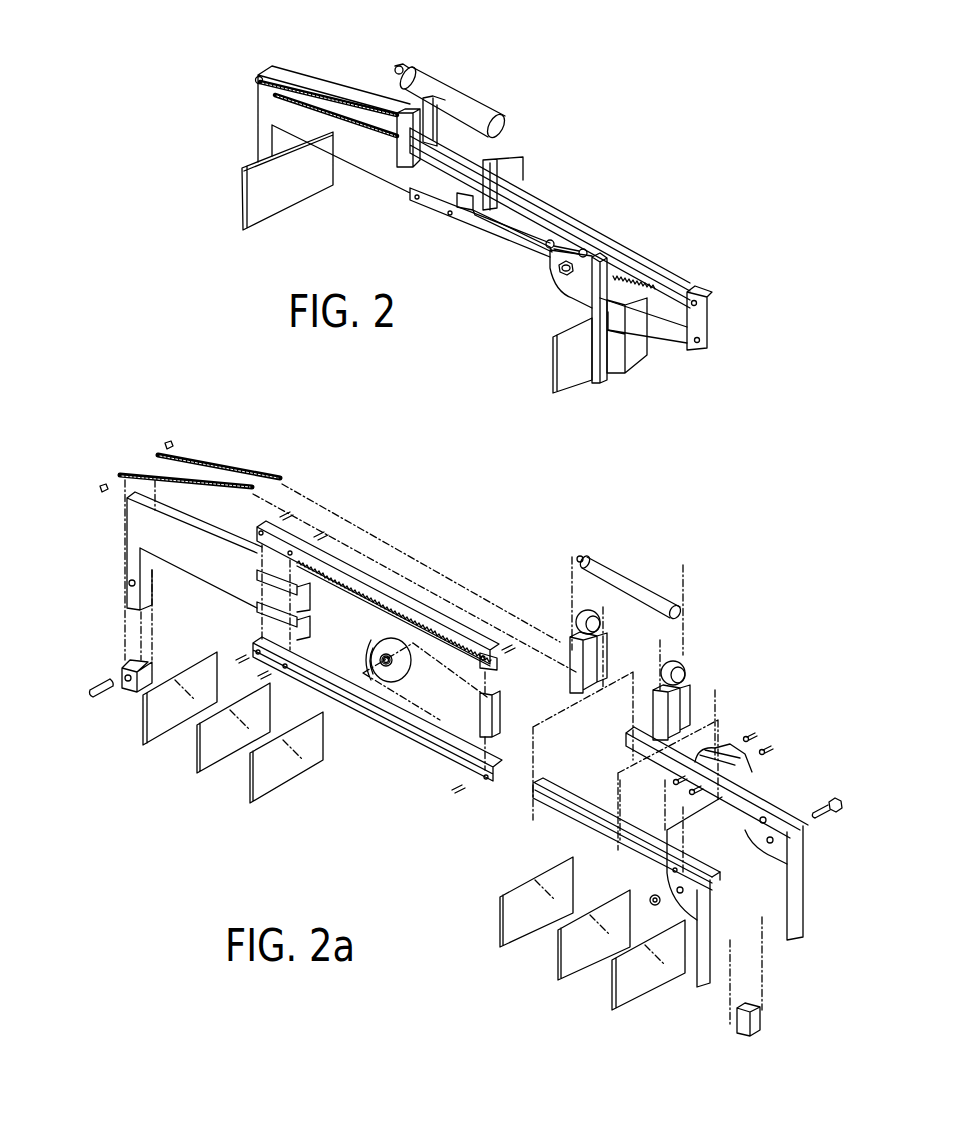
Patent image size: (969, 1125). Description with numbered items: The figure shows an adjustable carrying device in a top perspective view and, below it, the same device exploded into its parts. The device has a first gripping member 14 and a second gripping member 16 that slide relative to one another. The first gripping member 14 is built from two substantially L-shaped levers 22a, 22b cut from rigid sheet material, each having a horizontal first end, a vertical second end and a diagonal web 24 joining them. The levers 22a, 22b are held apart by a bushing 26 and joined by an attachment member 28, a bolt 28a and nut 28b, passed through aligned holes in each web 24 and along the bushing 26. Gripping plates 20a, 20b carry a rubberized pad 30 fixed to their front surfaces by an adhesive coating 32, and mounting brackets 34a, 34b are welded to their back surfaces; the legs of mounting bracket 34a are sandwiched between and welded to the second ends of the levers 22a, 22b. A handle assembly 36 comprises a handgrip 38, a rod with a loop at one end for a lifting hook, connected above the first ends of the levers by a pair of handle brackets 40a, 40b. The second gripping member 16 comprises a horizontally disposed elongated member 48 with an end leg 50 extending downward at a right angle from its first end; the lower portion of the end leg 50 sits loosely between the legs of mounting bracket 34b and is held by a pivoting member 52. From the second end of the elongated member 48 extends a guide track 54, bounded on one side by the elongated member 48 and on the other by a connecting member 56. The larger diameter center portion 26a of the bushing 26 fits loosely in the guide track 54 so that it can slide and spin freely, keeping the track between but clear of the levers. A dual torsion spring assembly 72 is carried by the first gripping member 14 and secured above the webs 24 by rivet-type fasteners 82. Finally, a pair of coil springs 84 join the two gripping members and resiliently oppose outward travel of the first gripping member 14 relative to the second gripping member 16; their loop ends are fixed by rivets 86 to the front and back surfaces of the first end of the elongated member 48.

In FIG. 2, the first gripping member 14 is at (543, 185).
In FIG. 2, the second gripping member 16 is at (303, 62).
In FIG. 2, the gripping plate 20a is at (558, 395).
In FIG. 2a, the gripping plate 20a is at (615, 1006).
In FIG. 2, the gripping plate 20b is at (240, 200).
In FIG. 2a, the gripping plate 20b is at (153, 742).
In FIG. 2, the L-shaped lever 22a is at (605, 383).
In FIG. 2a, the L-shaped lever 22a is at (552, 807).
In FIG. 2, the L-shaped lever 22b is at (586, 218).
In FIG. 2a, the L-shaped lever 22b is at (803, 905).
In FIG. 2, the web 24 is at (572, 287).
In FIG. 2a, the web 24 is at (775, 843).
In FIG. 2a, the bushing 26 is at (377, 658).
In FIG. 2a, the larger diameter center portion 26a is at (411, 665).
In FIG. 2, the attachment member 28 is at (560, 268).
In FIG. 2a, the bolt 28a is at (828, 815).
In FIG. 2a, the nut 28b is at (653, 895).
In FIG. 2a, the rubberized pad 30 is at (258, 797).
In FIG. 2a, the adhesive coating 32 is at (198, 772).
In FIG. 2a, the mounting bracket 34a is at (760, 1020).
In FIG. 2a, the mounting bracket 34b is at (122, 672).
In FIG. 2, the handle assembly 36 is at (468, 88).
In FIG. 2a, the handgrip 38 is at (633, 585).
In FIG. 2a, the handle bracket 40a is at (579, 612).
In FIG. 2a, the handle bracket 40b is at (687, 665).
In FIG. 2, the elongated member 48 is at (383, 188).
In FIG. 2a, the elongated member 48 is at (128, 512).
In FIG. 2a, the end leg 50 is at (128, 583).
In FIG. 2a, the pivoting member 52 is at (97, 703).
In FIG. 2, the guide track 54 is at (662, 297).
In FIG. 2, the connecting member 56 is at (704, 318).
In FIG. 2a, the dual torsion spring assembly 72 is at (733, 747).
In FIG. 2a, the rivet-type fastener 82 is at (773, 752).
In FIG. 2, the coil spring 84 is at (283, 92).
In FIG. 2a, the coil spring 84 is at (238, 468).
In FIG. 2, the rivet-type fastener 86 is at (258, 76).
In FIG. 2a, the rivet-type fastener 86 is at (170, 443).